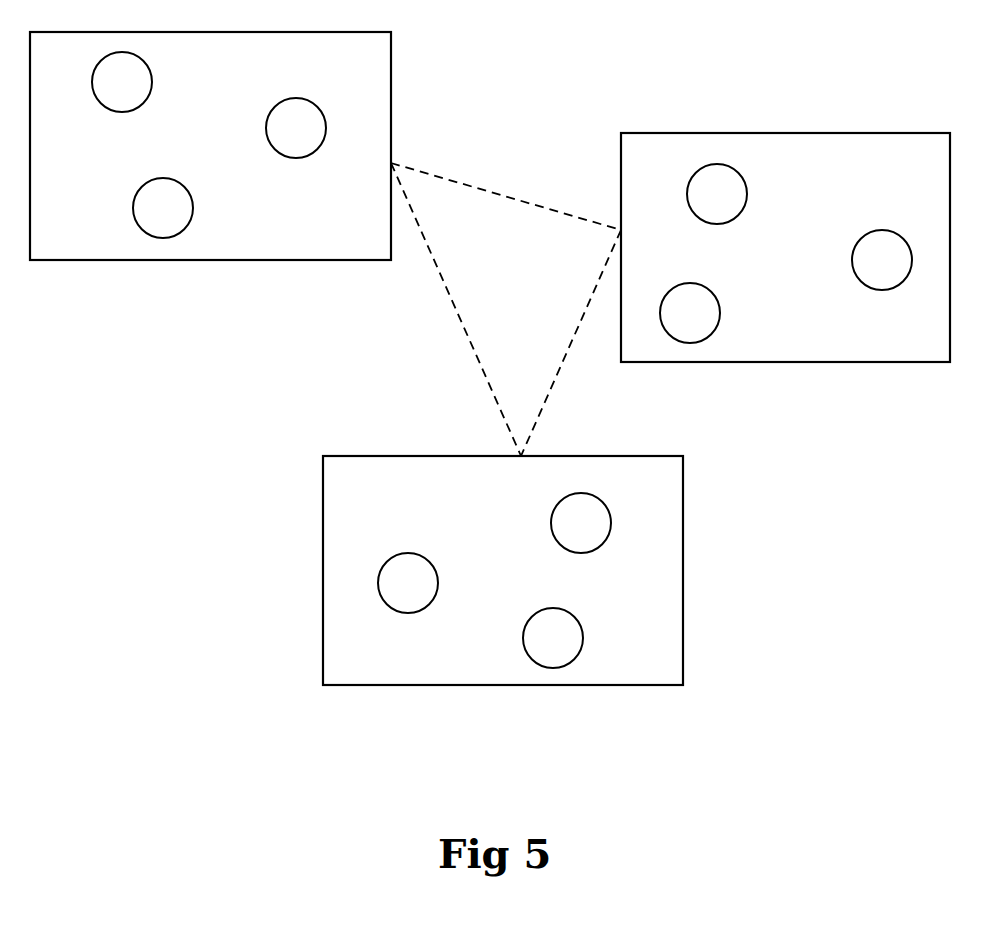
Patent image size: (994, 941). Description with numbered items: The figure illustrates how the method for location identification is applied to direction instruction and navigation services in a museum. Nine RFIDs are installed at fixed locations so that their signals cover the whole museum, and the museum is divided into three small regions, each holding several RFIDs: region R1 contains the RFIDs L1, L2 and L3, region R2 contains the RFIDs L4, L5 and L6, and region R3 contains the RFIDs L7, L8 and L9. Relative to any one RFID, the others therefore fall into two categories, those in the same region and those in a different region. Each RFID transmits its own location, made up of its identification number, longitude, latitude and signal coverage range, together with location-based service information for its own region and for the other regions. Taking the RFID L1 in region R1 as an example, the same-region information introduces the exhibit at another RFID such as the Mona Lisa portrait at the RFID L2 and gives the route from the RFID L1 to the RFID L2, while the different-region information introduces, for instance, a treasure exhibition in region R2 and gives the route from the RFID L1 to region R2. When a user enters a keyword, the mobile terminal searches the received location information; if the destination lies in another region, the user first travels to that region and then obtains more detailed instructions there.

The region R1 is at (210, 146).
The region R2 is at (785, 247).
The region R3 is at (503, 570).
The RFID L1 is at (122, 82).
The RFID L2 is at (296, 128).
The RFID L3 is at (163, 208).
The RFID L4 is at (717, 194).
The RFID L5 is at (690, 313).
The RFID L6 is at (882, 260).
The RFID L7 is at (408, 583).
The RFID L8 is at (581, 523).
The RFID L9 is at (553, 638).